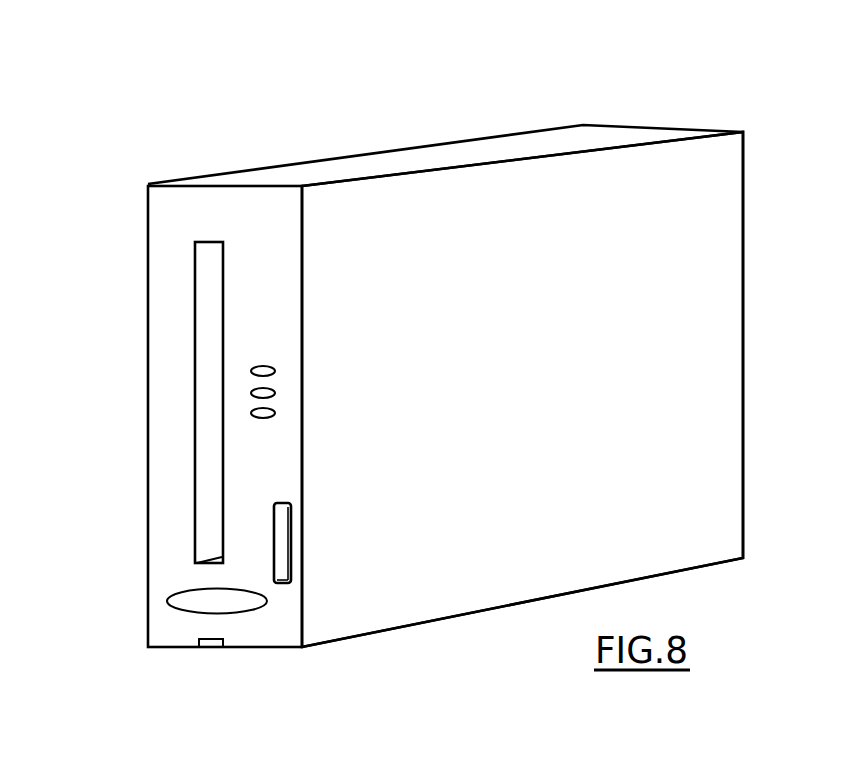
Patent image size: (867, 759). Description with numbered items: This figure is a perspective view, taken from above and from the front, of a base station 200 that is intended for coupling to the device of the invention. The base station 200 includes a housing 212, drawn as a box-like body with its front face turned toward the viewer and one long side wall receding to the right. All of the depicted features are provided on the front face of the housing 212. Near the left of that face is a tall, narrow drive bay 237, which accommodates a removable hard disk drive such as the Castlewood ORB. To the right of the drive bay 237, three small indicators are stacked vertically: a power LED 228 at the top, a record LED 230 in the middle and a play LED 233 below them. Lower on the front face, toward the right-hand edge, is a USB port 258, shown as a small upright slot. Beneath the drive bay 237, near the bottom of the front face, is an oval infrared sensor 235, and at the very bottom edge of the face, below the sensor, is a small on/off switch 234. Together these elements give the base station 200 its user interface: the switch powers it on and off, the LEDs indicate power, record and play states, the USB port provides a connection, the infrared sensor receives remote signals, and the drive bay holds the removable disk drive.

The base station 200 is at (744, 111).
The housing 212 is at (721, 312).
The power LED 228 is at (266, 367).
The record LED 230 is at (268, 392).
The play LED 233 is at (267, 413).
The on/off switch 234 is at (207, 648).
The infrared sensor 235 is at (242, 604).
The drive bay 237 is at (202, 384).
The USB port 258 is at (283, 544).